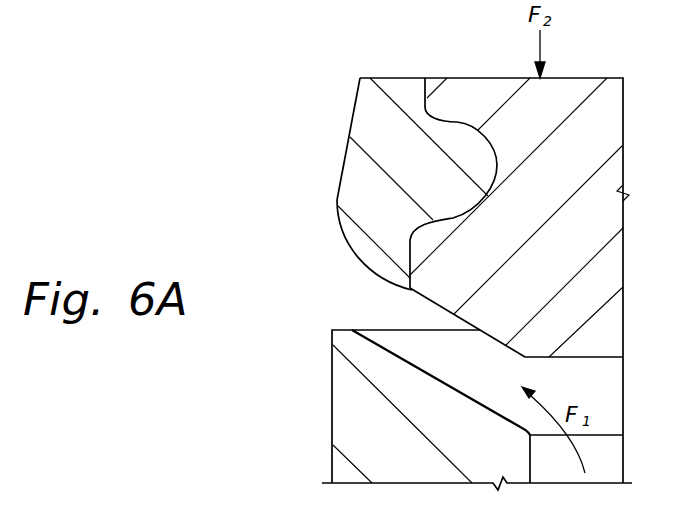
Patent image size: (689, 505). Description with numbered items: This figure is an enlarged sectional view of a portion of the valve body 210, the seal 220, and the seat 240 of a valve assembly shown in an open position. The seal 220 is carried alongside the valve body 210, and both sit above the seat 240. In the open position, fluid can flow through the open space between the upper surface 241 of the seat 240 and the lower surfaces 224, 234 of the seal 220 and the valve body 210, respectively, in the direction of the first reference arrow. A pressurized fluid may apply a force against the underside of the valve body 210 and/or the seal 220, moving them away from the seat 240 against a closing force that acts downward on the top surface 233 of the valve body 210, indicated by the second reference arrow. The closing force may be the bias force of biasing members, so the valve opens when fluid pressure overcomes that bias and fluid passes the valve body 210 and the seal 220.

The valve body 210 is at (588, 78).
The seal 220 is at (353, 115).
The lower surface of the seal 224 is at (361, 266).
The top surface of the valve body 233 is at (479, 78).
The lower surface of the valve body 234 is at (437, 304).
The seat 240 is at (332, 427).
The upper surface of the seat 241 is at (410, 362).